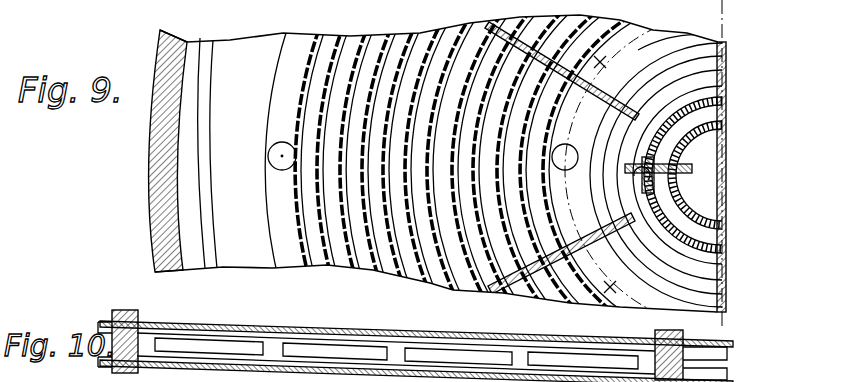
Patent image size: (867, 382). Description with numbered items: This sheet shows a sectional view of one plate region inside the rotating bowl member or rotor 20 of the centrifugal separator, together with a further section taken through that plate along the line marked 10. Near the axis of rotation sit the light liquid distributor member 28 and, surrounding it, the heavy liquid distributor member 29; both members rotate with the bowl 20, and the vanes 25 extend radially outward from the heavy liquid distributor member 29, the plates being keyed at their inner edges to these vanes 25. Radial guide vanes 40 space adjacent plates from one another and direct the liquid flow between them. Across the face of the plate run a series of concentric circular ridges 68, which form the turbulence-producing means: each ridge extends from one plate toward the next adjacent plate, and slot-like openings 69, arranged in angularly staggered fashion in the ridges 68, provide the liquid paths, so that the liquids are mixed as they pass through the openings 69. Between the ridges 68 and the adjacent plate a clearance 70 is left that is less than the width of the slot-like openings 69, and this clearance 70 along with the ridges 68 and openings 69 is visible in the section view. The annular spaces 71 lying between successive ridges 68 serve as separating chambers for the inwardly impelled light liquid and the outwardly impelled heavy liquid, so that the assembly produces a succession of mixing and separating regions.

In FIG. 9, the section line 10- 10 is at (643, 170).
In FIG. 9, the bowl member or rotor 20 is at (152, 172).
In FIG. 9, the vanes 25 is at (655, 178).
In FIG. 9, the light liquid distributor member 28 is at (667, 0).
In FIG. 9, the heavy liquid distributor member 29 is at (637, 48).
In FIG. 9, the radial guide vanes 40 is at (597, 164).
In FIG. 10, the radial guide vanes 40 is at (700, 346).
In FIG. 9, the circular ridges 68 is at (353, 50).
In FIG. 10, the circular ridges 68 is at (283, 330).
In FIG. 9, the slot-like openings 69 is at (343, 158).
In FIG. 10, the slot-like openings 69 is at (218, 347).
In FIG. 10, the clearance 70 is at (333, 333).
In FIG. 9, the annular spaces 71 is at (398, 50).